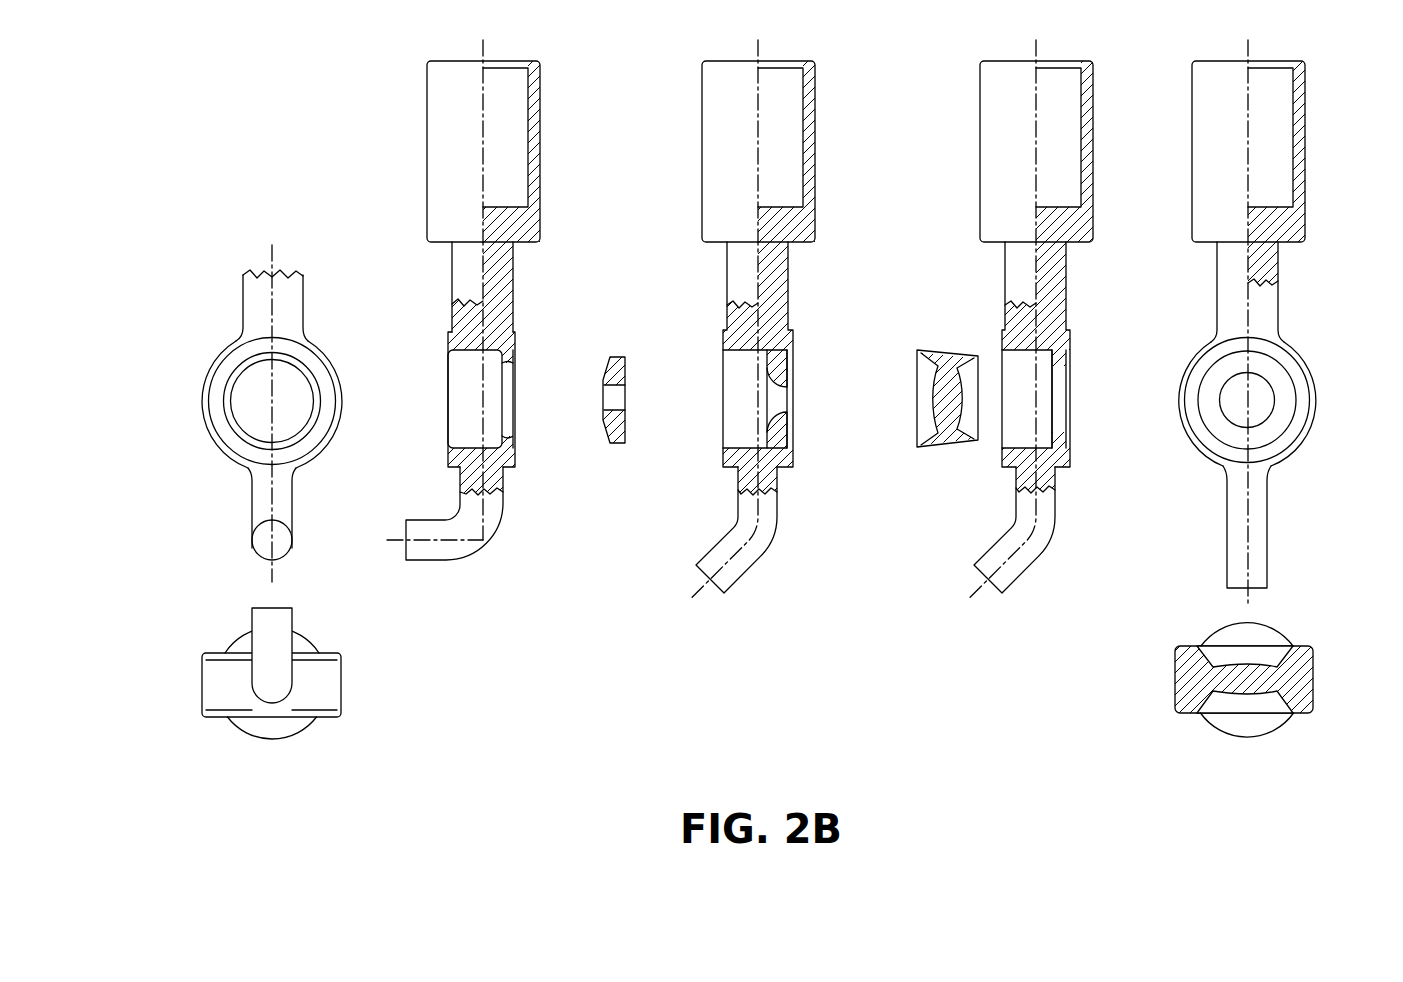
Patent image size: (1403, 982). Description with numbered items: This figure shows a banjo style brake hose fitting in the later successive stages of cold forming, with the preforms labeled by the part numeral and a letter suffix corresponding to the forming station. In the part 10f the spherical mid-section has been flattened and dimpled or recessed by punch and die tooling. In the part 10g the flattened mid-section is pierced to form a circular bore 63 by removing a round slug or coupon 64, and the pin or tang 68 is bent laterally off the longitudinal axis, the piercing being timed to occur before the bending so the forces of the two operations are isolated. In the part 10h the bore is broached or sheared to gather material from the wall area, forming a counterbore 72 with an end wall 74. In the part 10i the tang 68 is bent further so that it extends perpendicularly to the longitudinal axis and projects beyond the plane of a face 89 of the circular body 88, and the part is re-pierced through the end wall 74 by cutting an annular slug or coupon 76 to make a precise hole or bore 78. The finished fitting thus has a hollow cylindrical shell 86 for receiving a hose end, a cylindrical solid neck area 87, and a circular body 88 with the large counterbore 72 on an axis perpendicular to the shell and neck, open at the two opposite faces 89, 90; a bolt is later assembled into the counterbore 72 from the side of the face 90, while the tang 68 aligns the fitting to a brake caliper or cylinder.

The part 10i is at (363, 405).
The part 10h is at (788, 297).
The part 10g is at (1042, 320).
The part 10f is at (1282, 325).
The hollow cylindrical shell 86 is at (540, 112).
The cylindrical solid neck area 87 is at (243, 318).
The face 89 is at (207, 400).
The counterbore 72 is at (240, 380).
The hole or bore 78 is at (248, 428).
The end wall 74 is at (516, 450).
The annular slug or coupon 76 is at (610, 443).
The face 90 is at (330, 714).
The circular body 88 is at (203, 680).
The pin or tang 68 is at (253, 548).
The circular bore 63 is at (1036, 440).
The round slug or coupon 64 is at (923, 448).